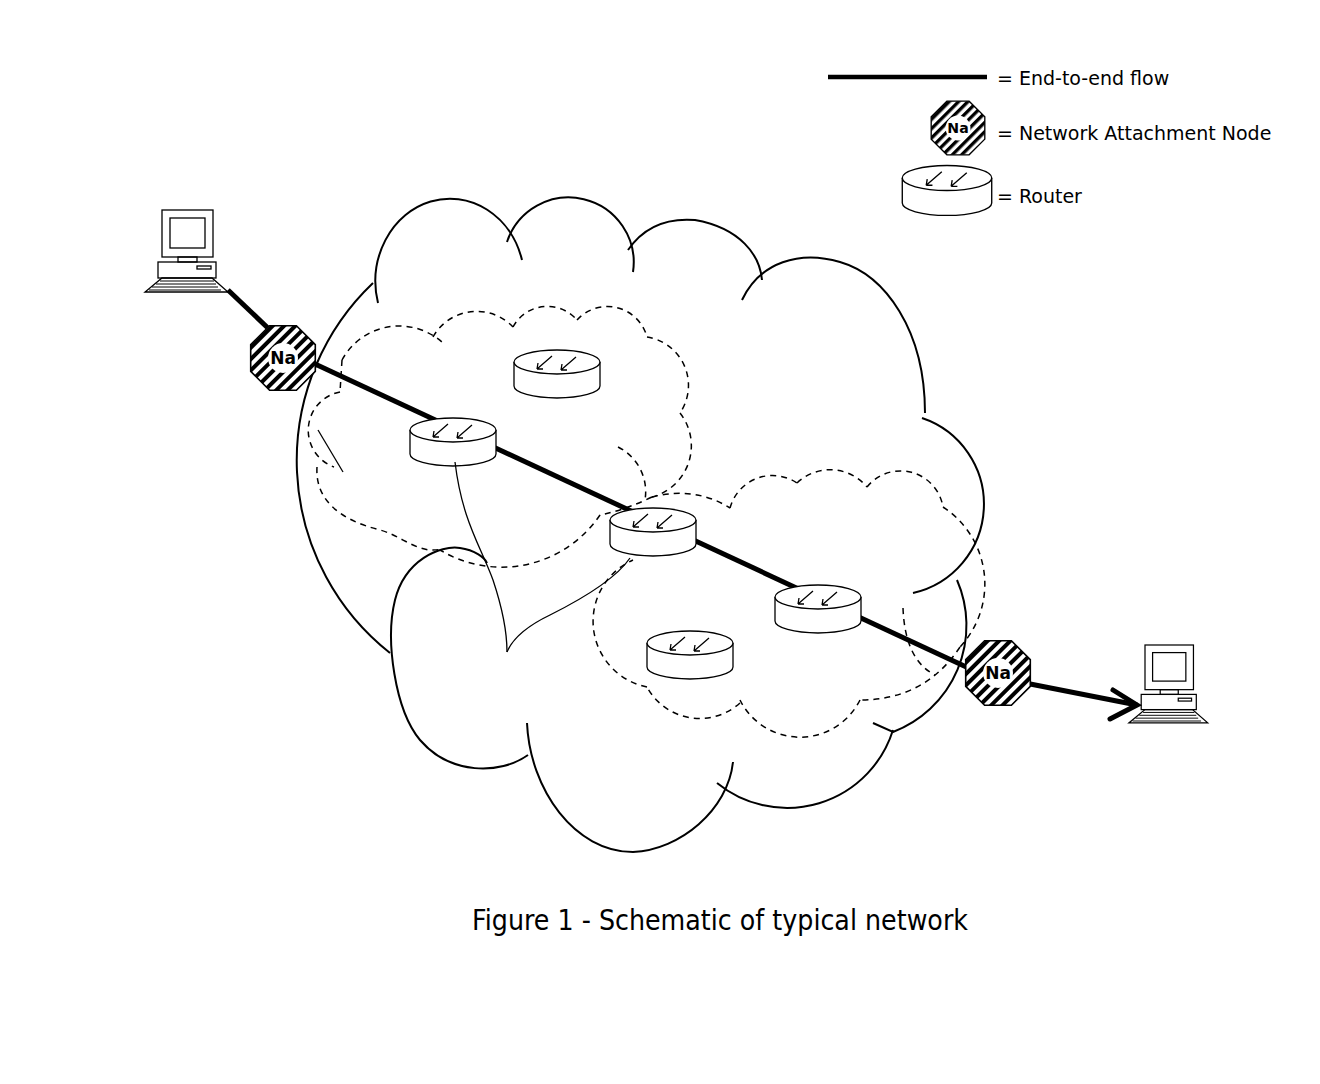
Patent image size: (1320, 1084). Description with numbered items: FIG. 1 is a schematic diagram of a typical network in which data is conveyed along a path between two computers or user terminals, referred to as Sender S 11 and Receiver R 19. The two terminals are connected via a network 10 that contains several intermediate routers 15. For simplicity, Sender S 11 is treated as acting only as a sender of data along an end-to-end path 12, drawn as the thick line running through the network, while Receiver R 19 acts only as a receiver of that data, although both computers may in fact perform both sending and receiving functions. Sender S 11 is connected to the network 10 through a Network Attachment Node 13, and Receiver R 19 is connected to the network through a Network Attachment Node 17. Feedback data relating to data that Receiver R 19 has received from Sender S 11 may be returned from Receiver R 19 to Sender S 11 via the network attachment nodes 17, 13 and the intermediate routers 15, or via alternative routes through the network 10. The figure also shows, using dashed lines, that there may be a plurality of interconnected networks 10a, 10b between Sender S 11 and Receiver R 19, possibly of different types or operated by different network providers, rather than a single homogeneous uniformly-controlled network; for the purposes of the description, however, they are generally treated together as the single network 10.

The network 10 is at (583, 203).
The interconnected network 10a is at (400, 328).
The interconnected network 10b is at (757, 477).
The Sender S 11 is at (188, 208).
The end-to-end path 12 is at (558, 477).
The Network Attachment Node 13 is at (267, 385).
The intermediate routers 15 is at (542, 576).
The Network Attachment Node 17 is at (1003, 716).
The Receiver R 19 is at (1163, 642).